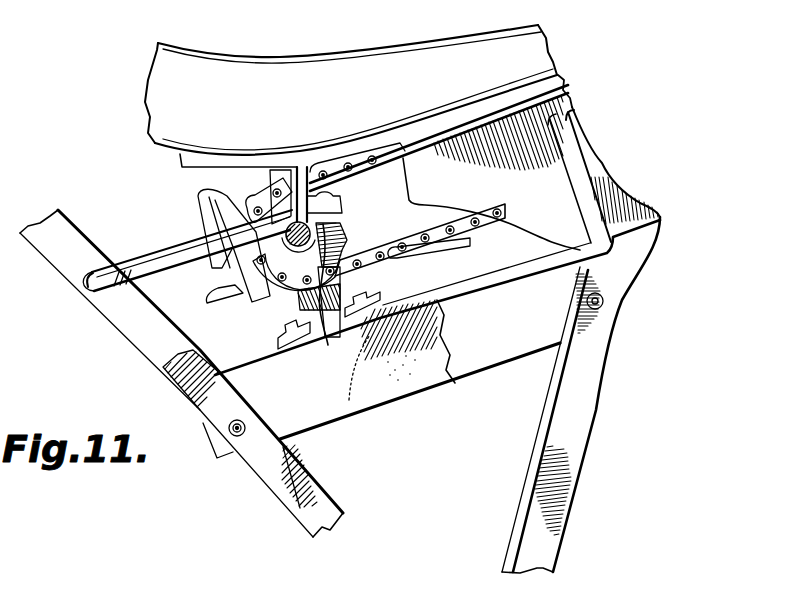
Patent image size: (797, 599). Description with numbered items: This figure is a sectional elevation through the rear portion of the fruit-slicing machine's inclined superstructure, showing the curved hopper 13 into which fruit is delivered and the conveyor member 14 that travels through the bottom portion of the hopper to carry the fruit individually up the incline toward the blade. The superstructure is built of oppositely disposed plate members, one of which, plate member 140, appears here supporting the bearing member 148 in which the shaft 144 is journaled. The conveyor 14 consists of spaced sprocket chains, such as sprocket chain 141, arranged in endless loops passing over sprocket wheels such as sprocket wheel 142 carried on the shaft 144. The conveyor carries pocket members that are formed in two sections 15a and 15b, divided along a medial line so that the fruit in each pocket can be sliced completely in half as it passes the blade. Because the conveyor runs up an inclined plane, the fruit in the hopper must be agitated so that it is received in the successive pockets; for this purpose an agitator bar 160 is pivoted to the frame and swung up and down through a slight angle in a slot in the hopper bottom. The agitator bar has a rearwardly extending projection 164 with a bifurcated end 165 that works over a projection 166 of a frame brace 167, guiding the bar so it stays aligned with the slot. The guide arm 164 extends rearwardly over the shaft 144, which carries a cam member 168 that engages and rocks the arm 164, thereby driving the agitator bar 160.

The curved hopper 13 is at (388, 57).
The conveyor member 14 is at (463, 250).
The pocket member section 15a is at (243, 293).
The pocket member section 15b is at (208, 210).
The plate member 140 is at (550, 142).
The sprocket chain 141 is at (341, 166).
The sprocket wheel 142 is at (330, 202).
The shaft 144 is at (337, 217).
The bearing member 148 is at (282, 330).
The agitator bar 160 is at (468, 117).
The rearwardly extending projection 164 is at (146, 262).
The bifurcated end 165 is at (92, 295).
The projection 166 is at (123, 323).
The frame brace 167 is at (340, 505).
The cam member 168 is at (324, 295).